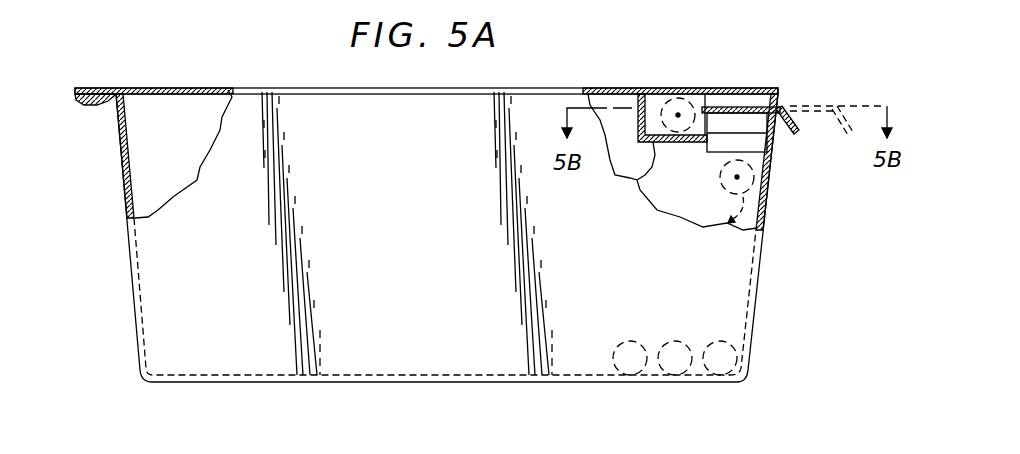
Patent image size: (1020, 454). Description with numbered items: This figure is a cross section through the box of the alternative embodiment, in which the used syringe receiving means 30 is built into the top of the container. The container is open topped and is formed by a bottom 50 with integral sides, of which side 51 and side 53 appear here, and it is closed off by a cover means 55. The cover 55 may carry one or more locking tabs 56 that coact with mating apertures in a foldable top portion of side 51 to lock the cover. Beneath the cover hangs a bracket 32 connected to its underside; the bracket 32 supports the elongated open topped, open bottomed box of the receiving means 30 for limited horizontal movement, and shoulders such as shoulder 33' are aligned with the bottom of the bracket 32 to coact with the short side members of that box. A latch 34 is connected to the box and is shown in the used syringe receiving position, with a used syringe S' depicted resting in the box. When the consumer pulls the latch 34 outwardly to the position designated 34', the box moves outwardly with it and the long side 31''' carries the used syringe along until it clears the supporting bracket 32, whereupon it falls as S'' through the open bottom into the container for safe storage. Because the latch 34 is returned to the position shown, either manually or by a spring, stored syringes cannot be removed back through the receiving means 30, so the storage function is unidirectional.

The used syringe receiving means 30 is at (715, 58).
The long side of box 31''' is at (683, 91).
The bracket 32 is at (636, 182).
The shoulder 33' is at (717, 156).
The latch 34 is at (770, 143).
The latch in outward position 34' is at (837, 94).
The bottom 50 is at (463, 372).
The side 51 is at (144, 300).
The side 53 is at (747, 310).
The cover means 55 is at (173, 88).
The locking tab 56 is at (93, 106).
The used syringe S' is at (708, 91).
The falling used syringe S'' is at (760, 192).